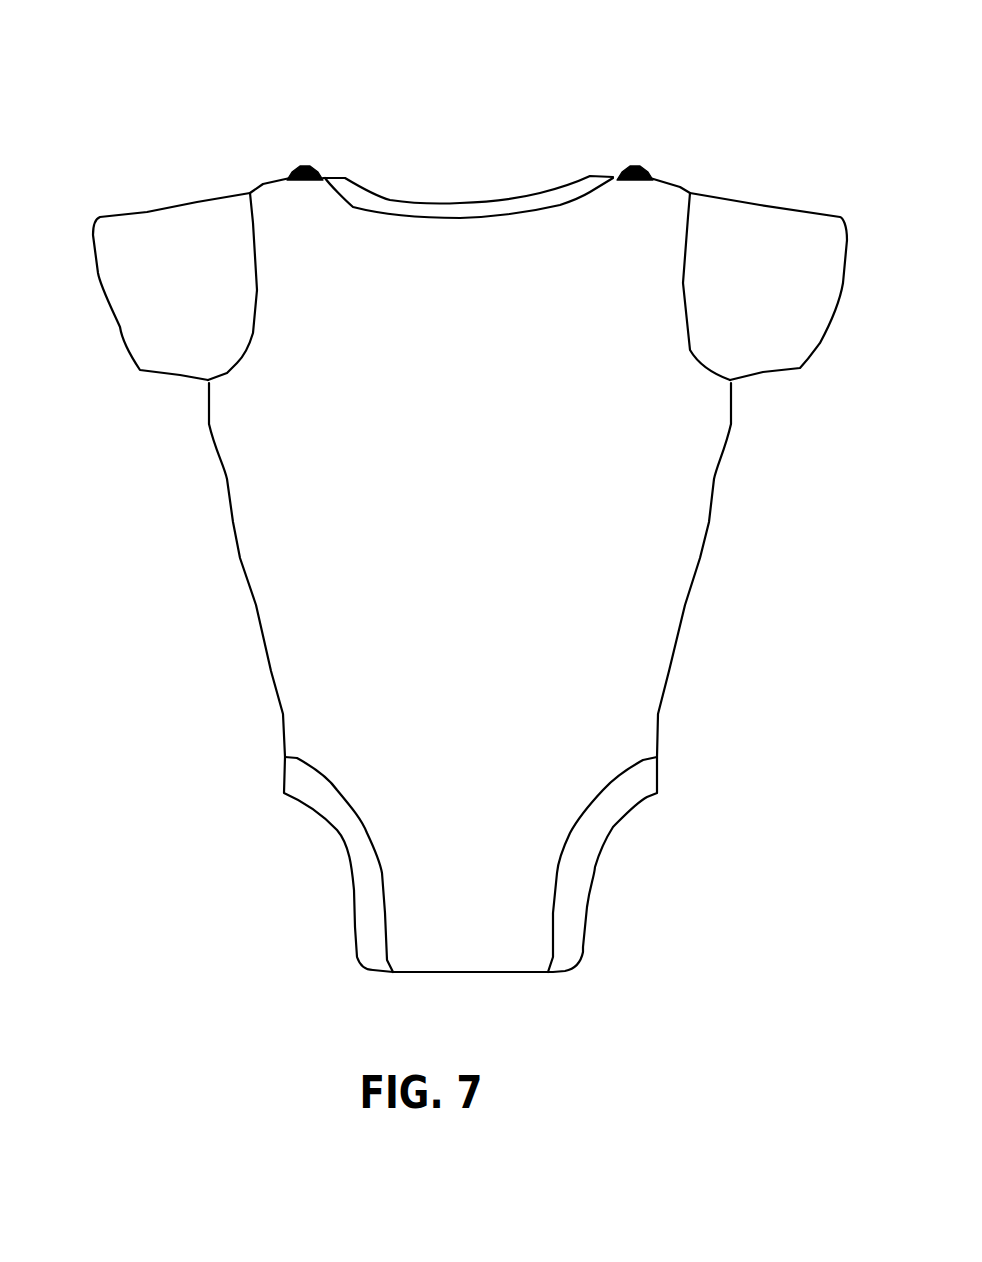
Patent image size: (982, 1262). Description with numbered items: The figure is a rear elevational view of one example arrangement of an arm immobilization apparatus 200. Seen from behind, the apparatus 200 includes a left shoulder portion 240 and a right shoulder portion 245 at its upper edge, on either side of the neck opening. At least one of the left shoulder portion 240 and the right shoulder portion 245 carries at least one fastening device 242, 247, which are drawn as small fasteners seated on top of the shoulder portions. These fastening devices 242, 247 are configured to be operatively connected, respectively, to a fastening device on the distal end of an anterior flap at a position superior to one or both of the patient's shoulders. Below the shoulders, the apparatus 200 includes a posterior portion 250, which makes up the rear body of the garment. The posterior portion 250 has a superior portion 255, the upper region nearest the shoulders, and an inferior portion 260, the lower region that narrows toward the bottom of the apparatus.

The arm immobilization apparatus 200 is at (435, 492).
The left shoulder portion 240 is at (262, 182).
The fastening device 242 is at (630, 165).
The right shoulder portion 245 is at (678, 185).
The fastening device 247 is at (313, 172).
The posterior portion 250 is at (377, 535).
The superior portion 255 is at (392, 313).
The inferior portion 260 is at (420, 862).